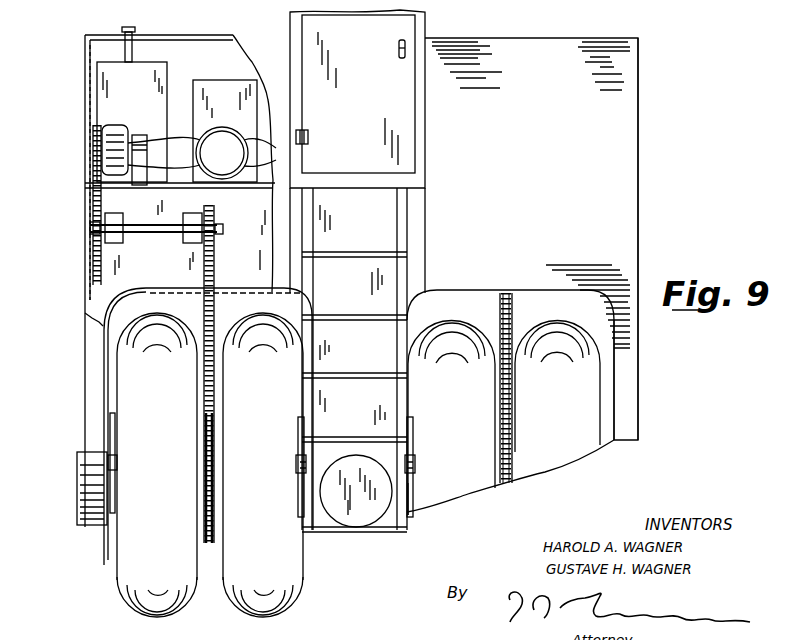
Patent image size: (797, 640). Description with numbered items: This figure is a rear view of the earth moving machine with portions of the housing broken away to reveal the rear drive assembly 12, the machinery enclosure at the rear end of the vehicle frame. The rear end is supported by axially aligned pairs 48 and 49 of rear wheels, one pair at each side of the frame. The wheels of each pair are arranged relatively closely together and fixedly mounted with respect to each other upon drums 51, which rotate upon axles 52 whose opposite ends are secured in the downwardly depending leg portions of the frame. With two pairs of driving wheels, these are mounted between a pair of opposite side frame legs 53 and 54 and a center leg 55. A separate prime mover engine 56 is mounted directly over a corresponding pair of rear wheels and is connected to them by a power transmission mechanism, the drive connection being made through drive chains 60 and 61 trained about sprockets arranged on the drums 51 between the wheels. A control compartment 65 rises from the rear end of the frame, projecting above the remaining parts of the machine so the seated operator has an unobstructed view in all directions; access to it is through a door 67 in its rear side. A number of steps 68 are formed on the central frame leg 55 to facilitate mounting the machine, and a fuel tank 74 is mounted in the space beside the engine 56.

The rear drive assembly 12 is at (540, 156).
The pair of rear wheels 48 is at (225, 592).
The pair of rear wheels 49 is at (525, 466).
The drum 51 is at (302, 518).
The axle 52 is at (76, 463).
The side frame leg 53 is at (83, 388).
The side frame leg 54 is at (630, 378).
The center leg 55 is at (389, 530).
The prime mover engine 56 is at (220, 86).
The drive chain 60 is at (215, 371).
The drive chain 61 is at (513, 367).
The control compartment 65 is at (425, 22).
The door 67 is at (378, 90).
The steps 68 is at (360, 318).
The fuel tank 74 is at (108, 87).